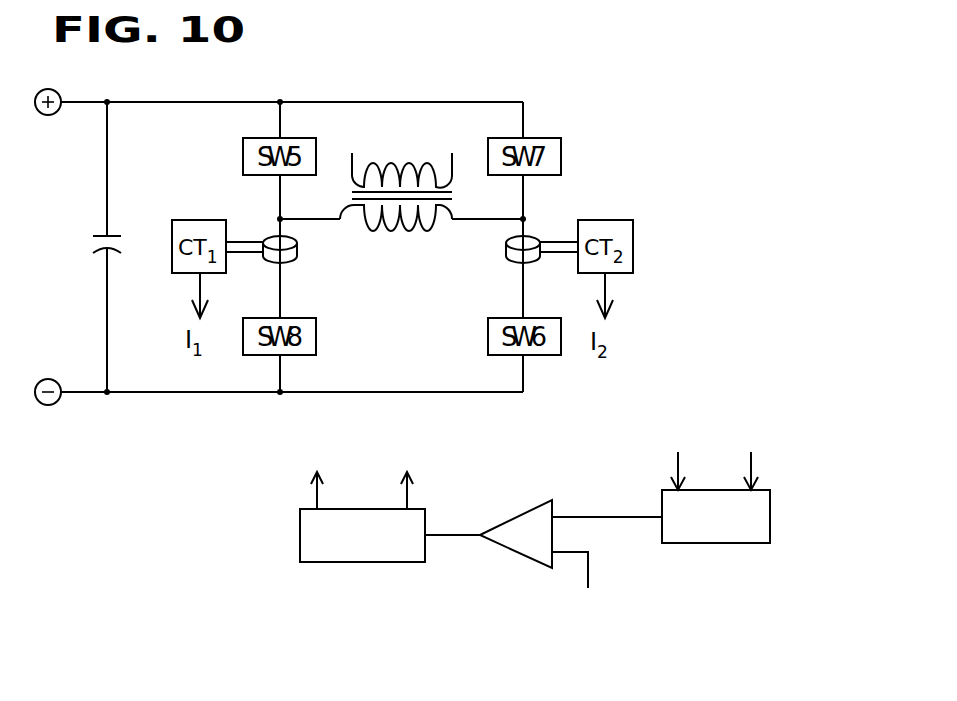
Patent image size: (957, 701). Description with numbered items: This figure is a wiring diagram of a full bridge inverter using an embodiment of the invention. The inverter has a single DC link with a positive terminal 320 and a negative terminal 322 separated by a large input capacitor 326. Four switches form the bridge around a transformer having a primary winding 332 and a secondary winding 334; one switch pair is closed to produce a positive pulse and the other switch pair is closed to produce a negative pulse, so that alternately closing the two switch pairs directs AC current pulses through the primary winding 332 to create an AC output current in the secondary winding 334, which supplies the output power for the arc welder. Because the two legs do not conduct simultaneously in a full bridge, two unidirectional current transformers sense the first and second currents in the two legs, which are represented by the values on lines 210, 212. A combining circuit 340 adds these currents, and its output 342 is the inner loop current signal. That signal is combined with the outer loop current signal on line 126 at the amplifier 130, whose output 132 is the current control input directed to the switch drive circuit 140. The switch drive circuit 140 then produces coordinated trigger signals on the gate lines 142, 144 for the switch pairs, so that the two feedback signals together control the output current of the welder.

The positive terminal 320 is at (64, 104).
The negative terminal 322 is at (63, 392).
The input capacitor 326 is at (100, 242).
The primary winding 332 is at (402, 228).
The secondary winding 334 is at (398, 184).
The switch drive circuit 140 is at (372, 562).
The gate line 142 is at (312, 487).
The gate line 144 is at (400, 494).
The amplifier 130 is at (525, 505).
The output 132 is at (455, 537).
The line 126 is at (588, 582).
The combining circuit 340 is at (770, 530).
The output 342 is at (607, 516).
The line 210 is at (676, 463).
The line 212 is at (753, 463).